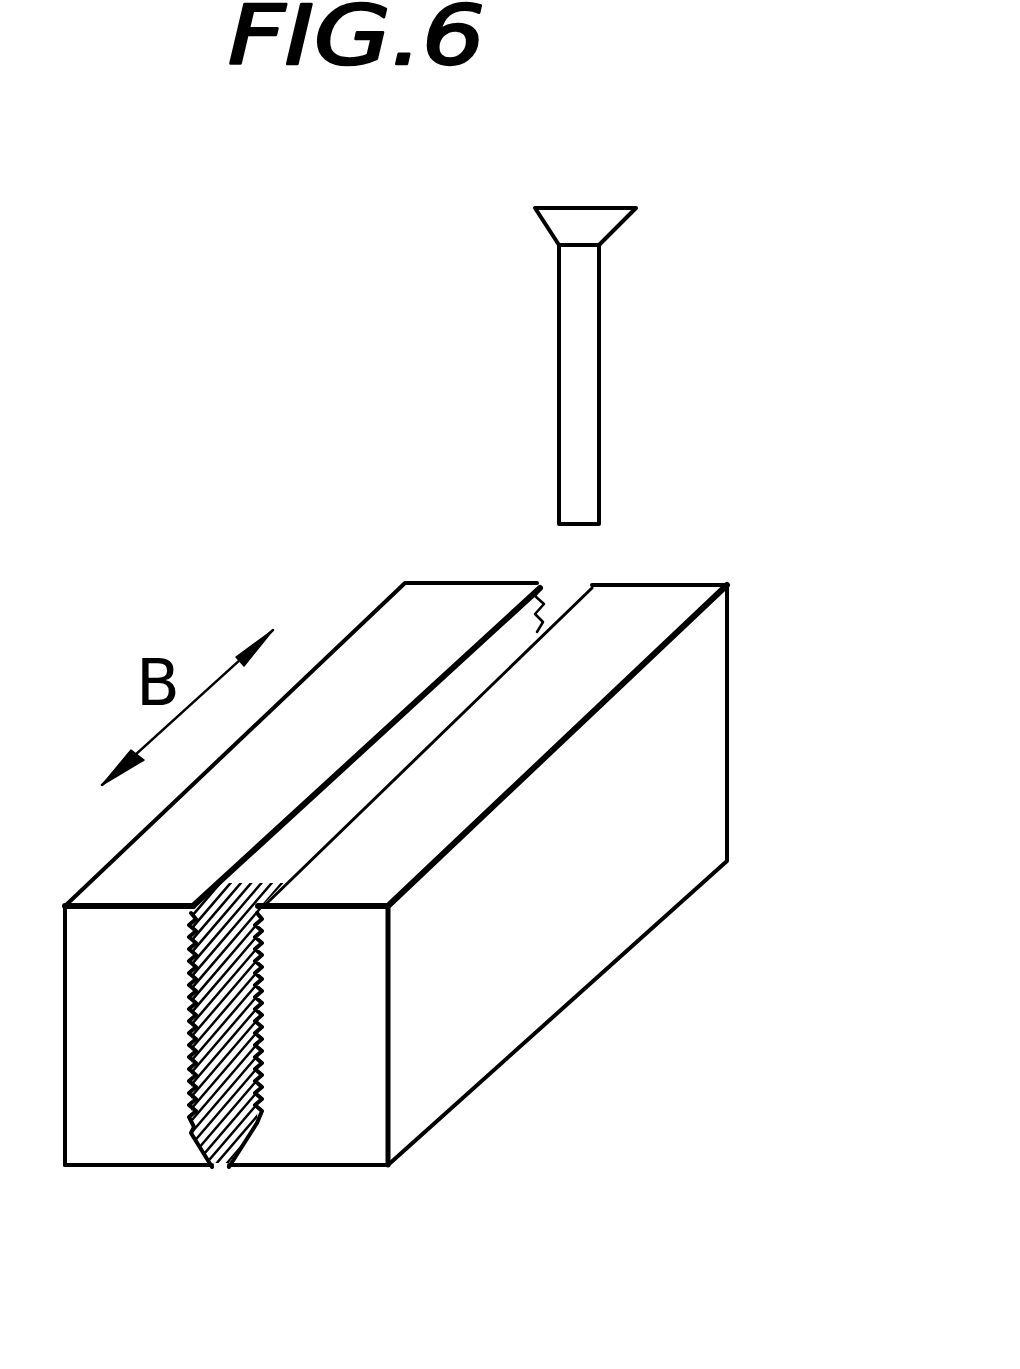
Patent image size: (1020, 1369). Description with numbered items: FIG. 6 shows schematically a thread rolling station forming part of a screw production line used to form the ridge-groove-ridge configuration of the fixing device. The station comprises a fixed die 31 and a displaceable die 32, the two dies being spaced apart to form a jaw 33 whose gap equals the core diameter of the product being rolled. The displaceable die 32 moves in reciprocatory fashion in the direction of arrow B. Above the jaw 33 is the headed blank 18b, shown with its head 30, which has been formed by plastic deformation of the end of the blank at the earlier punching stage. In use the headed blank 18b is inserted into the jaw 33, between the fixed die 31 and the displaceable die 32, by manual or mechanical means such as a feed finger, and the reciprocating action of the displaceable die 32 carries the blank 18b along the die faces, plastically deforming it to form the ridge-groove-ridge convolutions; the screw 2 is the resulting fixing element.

The screw 2 is at (619, 355).
The head 30 is at (593, 222).
The headed blank 18b is at (598, 303).
The fixed die 31 is at (396, 880).
The displaceable die 32 is at (123, 1110).
The jaw 33 is at (562, 592).